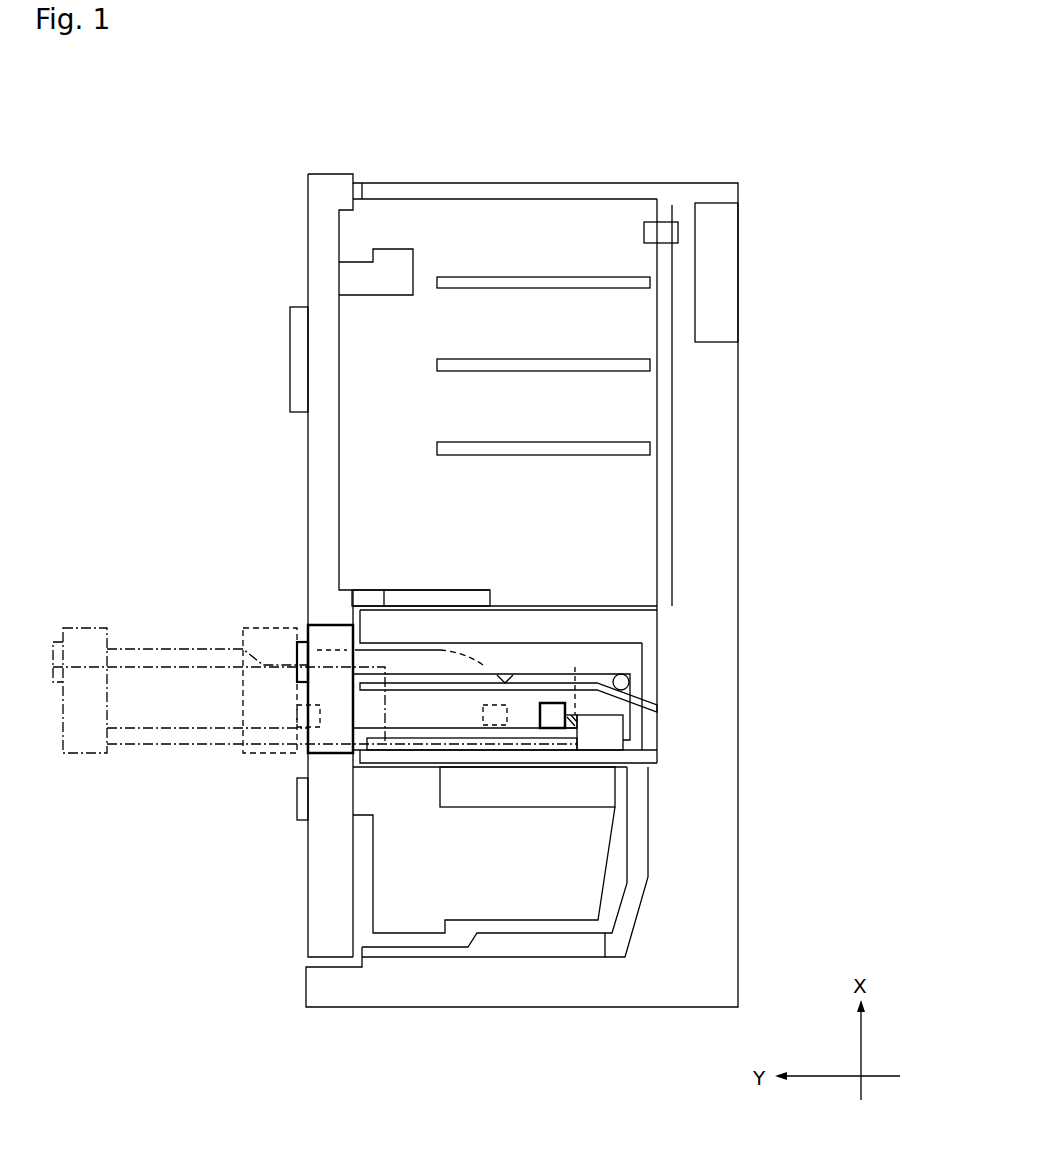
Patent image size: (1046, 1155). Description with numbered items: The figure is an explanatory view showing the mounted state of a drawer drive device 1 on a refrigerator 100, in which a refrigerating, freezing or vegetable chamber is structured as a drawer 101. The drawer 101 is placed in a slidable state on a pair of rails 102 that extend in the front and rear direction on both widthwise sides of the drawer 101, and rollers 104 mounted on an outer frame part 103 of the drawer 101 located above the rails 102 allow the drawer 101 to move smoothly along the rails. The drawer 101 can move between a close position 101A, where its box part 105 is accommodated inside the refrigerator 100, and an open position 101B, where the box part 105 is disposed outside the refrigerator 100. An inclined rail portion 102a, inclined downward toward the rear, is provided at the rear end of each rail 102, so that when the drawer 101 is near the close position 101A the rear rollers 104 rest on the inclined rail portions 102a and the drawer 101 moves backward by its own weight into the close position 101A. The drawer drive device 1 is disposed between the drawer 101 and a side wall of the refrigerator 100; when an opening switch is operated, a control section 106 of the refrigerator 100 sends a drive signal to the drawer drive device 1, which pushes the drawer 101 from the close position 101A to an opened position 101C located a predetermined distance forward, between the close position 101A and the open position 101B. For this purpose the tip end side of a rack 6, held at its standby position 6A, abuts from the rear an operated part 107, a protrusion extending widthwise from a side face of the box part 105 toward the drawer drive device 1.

The refrigerator 100 is at (744, 146).
The control section 106 is at (730, 250).
The rail 102 is at (632, 678).
The inclined rail portion 102a is at (657, 697).
The outer frame part 103 is at (513, 670).
The roller 104 is at (540, 688).
The box part 105 is at (463, 722).
The rack 6 is at (552, 722).
The standby position 6A is at (572, 730).
The operated part 107 is at (568, 722).
The drawer drive device 1 is at (624, 750).
The drawer 101 is at (315, 693).
The close position 101A is at (323, 643).
The open position 101B is at (69, 612).
The opened position 101C is at (242, 621).